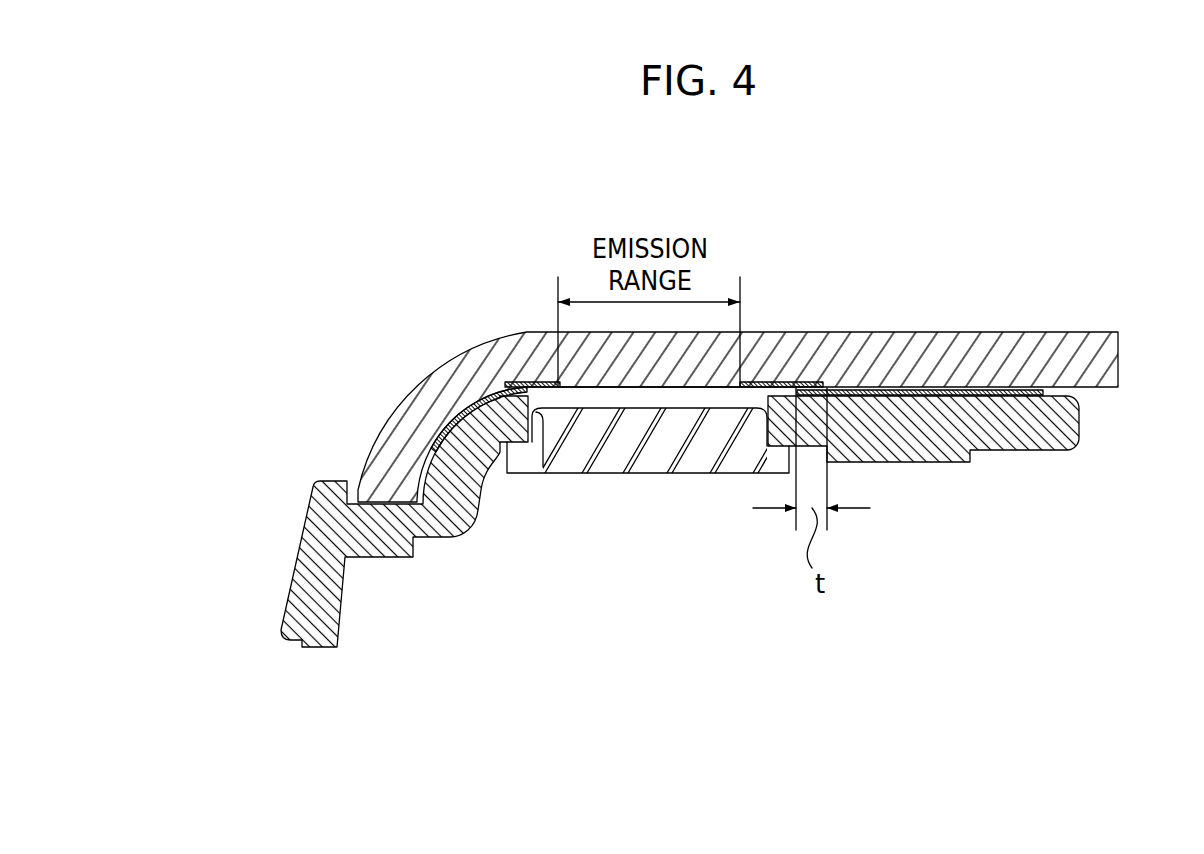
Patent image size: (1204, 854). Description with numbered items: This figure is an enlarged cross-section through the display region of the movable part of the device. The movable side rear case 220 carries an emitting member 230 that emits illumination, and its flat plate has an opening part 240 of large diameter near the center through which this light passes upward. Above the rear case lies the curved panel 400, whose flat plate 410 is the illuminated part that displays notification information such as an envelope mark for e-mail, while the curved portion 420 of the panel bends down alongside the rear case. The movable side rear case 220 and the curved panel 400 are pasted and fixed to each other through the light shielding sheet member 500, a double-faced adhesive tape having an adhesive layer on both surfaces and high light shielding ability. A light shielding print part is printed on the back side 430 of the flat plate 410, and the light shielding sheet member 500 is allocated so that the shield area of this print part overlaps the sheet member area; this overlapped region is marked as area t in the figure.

The movable side rear case 220 is at (293, 622).
The emitting member 230 is at (654, 458).
The opening part 240 is at (542, 468).
The curved panel 400 is at (893, 321).
The flat plate 410 is at (998, 347).
The curved portion of cover member 420 is at (400, 442).
The back side 430 is at (722, 389).
The light shielding sheet member 500 is at (1153, 443).